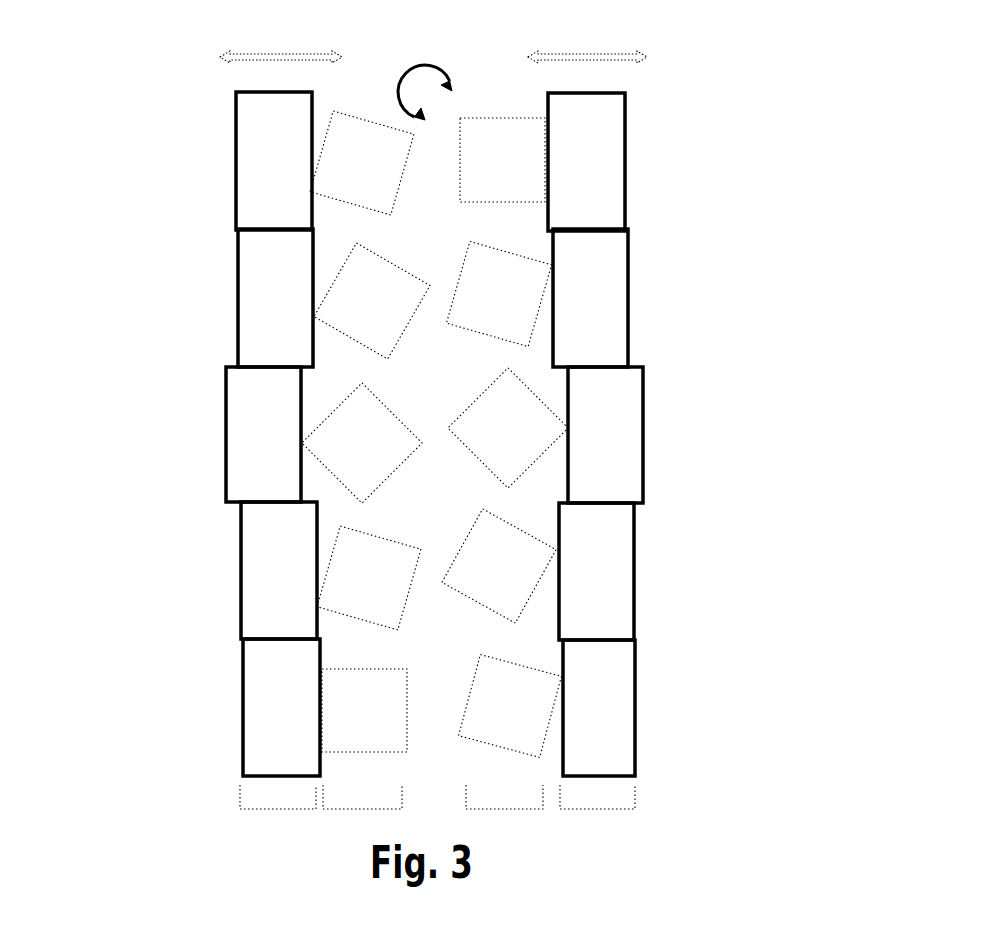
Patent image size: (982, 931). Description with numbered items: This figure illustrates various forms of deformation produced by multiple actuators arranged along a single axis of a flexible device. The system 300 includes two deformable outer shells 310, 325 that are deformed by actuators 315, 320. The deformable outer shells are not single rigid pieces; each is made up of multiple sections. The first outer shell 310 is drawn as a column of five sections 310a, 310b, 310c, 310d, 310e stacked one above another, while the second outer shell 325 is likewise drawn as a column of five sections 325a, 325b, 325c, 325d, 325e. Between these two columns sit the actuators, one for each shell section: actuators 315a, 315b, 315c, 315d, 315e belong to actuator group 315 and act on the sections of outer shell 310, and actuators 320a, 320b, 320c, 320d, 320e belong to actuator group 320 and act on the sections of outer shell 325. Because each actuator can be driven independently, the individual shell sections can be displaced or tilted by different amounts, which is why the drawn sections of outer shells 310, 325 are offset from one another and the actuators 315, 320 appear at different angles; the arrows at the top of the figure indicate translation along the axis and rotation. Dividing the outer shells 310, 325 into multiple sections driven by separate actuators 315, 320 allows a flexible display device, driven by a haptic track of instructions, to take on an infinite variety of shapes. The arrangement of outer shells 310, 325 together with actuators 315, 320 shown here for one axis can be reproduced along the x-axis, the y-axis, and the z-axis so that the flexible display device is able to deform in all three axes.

The system 300 is at (969, 64).
The deformable outer shell 310 is at (278, 810).
The outer shell section 310a is at (237, 128).
The outer shell section 310b is at (239, 270).
The outer shell section 310c is at (226, 407).
The outer shell section 310d is at (241, 548).
The outer shell section 310e is at (243, 688).
The actuator 315 is at (362, 810).
The actuator 315a is at (333, 170).
The actuator 315b is at (335, 317).
The actuator 315c is at (330, 450).
The actuator 315d is at (333, 595).
The actuator 315e is at (343, 730).
The actuator 320 is at (504, 810).
The actuator 320a is at (530, 146).
The actuator 320b is at (533, 288).
The actuator 320c is at (527, 423).
The actuator 320d is at (532, 567).
The actuator 320e is at (535, 707).
The deformable outer shell 325 is at (597, 810).
The outer shell section 325a is at (625, 122).
The outer shell section 325b is at (628, 282).
The outer shell section 325c is at (643, 388).
The outer shell section 325d is at (634, 547).
The outer shell section 325e is at (635, 687).